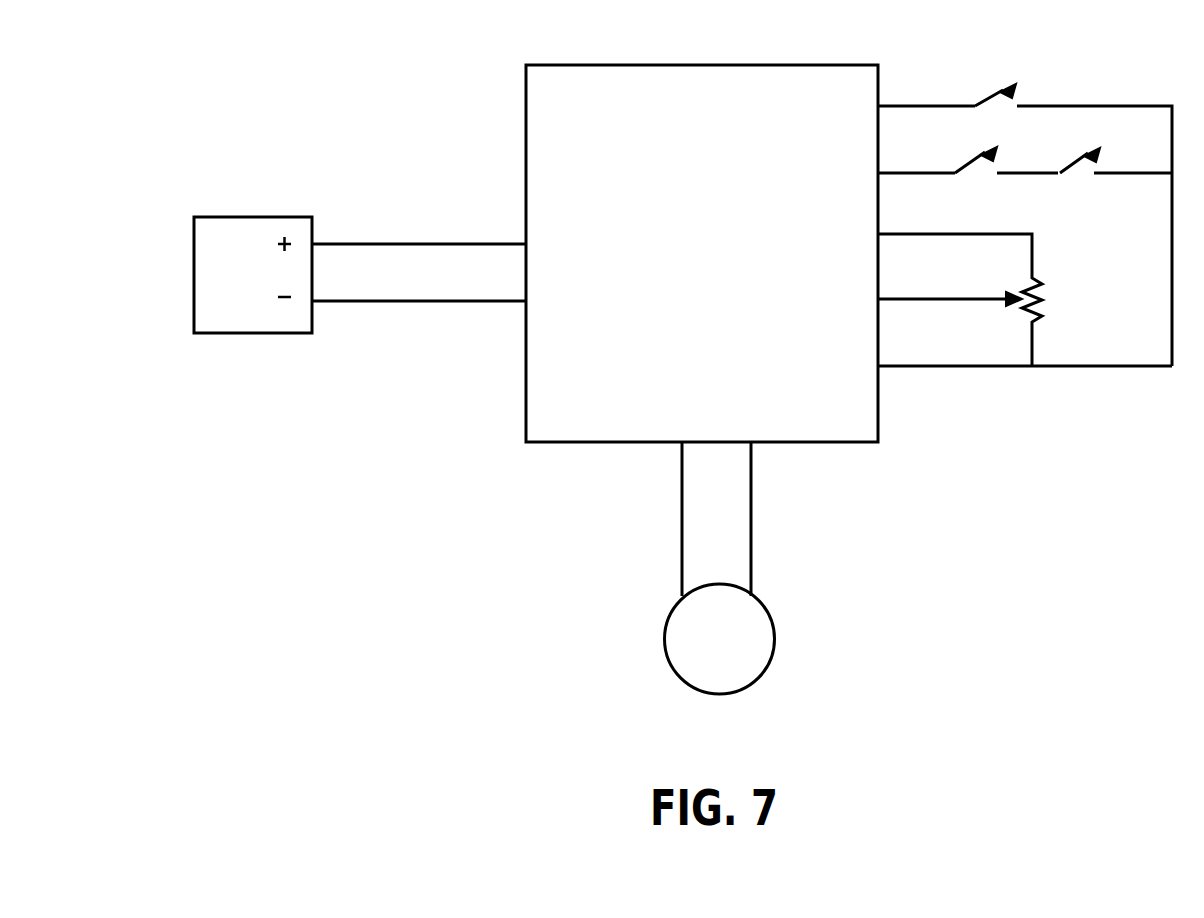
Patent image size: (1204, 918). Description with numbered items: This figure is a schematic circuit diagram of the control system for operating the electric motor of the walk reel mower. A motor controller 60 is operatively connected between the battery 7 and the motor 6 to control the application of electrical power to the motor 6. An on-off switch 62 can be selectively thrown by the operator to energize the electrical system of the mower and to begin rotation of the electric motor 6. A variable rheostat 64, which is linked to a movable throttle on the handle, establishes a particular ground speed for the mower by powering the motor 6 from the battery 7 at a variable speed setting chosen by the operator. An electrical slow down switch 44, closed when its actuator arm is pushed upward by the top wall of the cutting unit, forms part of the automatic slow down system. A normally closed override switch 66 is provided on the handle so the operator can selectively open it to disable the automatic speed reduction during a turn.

The motor controller 60 is at (702, 253).
The battery 7 is at (240, 241).
The on-off switch 62 is at (981, 102).
The slow down switch 44 is at (973, 170).
The override switch 66 is at (1064, 170).
The variable rheostat 64 is at (953, 297).
The motor 6 is at (738, 621).